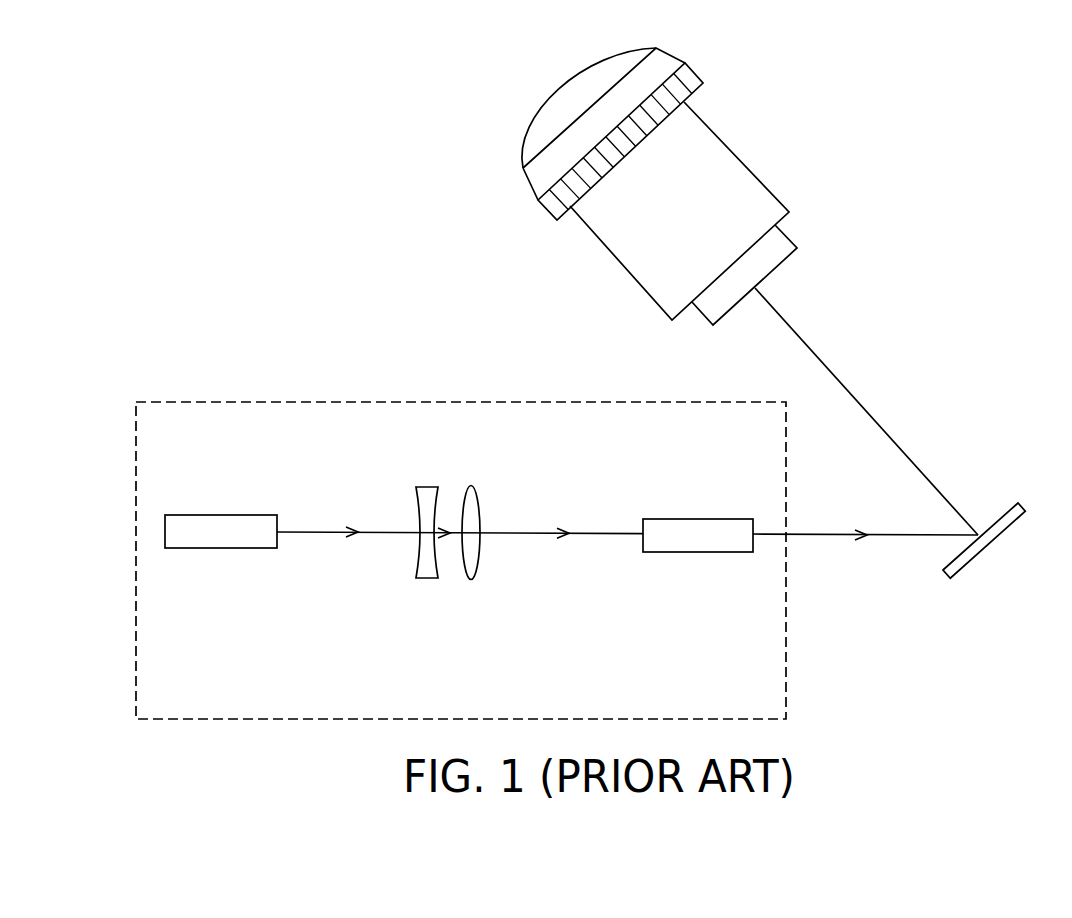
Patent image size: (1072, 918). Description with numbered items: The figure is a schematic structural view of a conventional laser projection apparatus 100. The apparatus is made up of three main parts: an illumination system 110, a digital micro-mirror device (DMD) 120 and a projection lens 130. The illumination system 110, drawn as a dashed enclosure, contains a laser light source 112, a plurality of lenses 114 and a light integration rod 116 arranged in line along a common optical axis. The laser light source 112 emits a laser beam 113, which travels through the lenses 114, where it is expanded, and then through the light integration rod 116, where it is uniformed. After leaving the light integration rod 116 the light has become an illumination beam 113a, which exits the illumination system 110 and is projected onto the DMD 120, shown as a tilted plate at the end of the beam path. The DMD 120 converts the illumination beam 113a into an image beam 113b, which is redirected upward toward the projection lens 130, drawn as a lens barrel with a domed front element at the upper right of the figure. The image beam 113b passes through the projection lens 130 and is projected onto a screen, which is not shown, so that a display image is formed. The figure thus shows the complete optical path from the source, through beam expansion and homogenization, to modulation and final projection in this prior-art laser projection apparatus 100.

The laser projection apparatus 100 is at (975, 745).
The illumination system 110 is at (440, 402).
The laser light source 112 is at (223, 535).
The laser beam 113 is at (313, 533).
The illumination beam 113a is at (830, 534).
The image beam 113b is at (849, 392).
The lenses 114 is at (470, 568).
The light integration rod 116 is at (695, 540).
The digital micro-mirror device 120 is at (968, 557).
The projection lens 130 is at (722, 183).